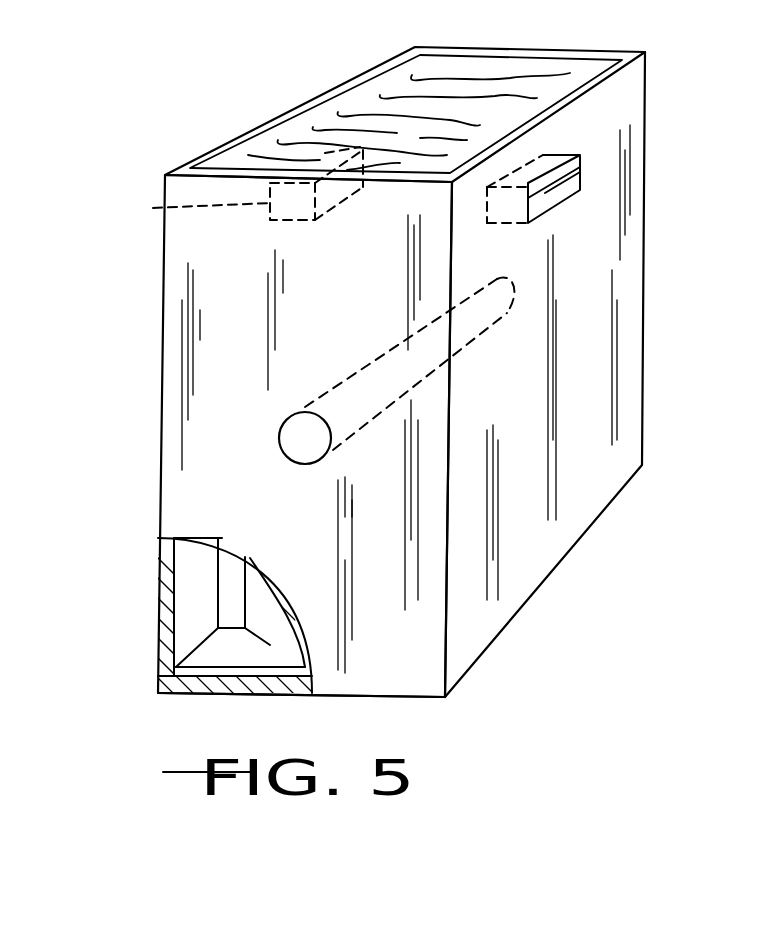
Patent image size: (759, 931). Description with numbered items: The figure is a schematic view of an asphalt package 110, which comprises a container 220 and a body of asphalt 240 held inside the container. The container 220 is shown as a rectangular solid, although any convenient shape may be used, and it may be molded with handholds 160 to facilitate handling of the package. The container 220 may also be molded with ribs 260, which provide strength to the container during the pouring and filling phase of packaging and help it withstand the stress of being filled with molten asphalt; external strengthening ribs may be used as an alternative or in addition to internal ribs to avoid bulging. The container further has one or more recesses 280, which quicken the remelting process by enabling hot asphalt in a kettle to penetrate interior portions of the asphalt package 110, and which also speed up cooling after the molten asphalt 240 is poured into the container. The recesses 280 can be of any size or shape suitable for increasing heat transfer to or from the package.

The asphalt package 110 is at (171, 120).
The handholds 160 is at (675, 188).
The container 220 is at (162, 410).
The body of asphalt 240 is at (377, 100).
The ribs 260 is at (230, 593).
The recesses 280 is at (312, 464).